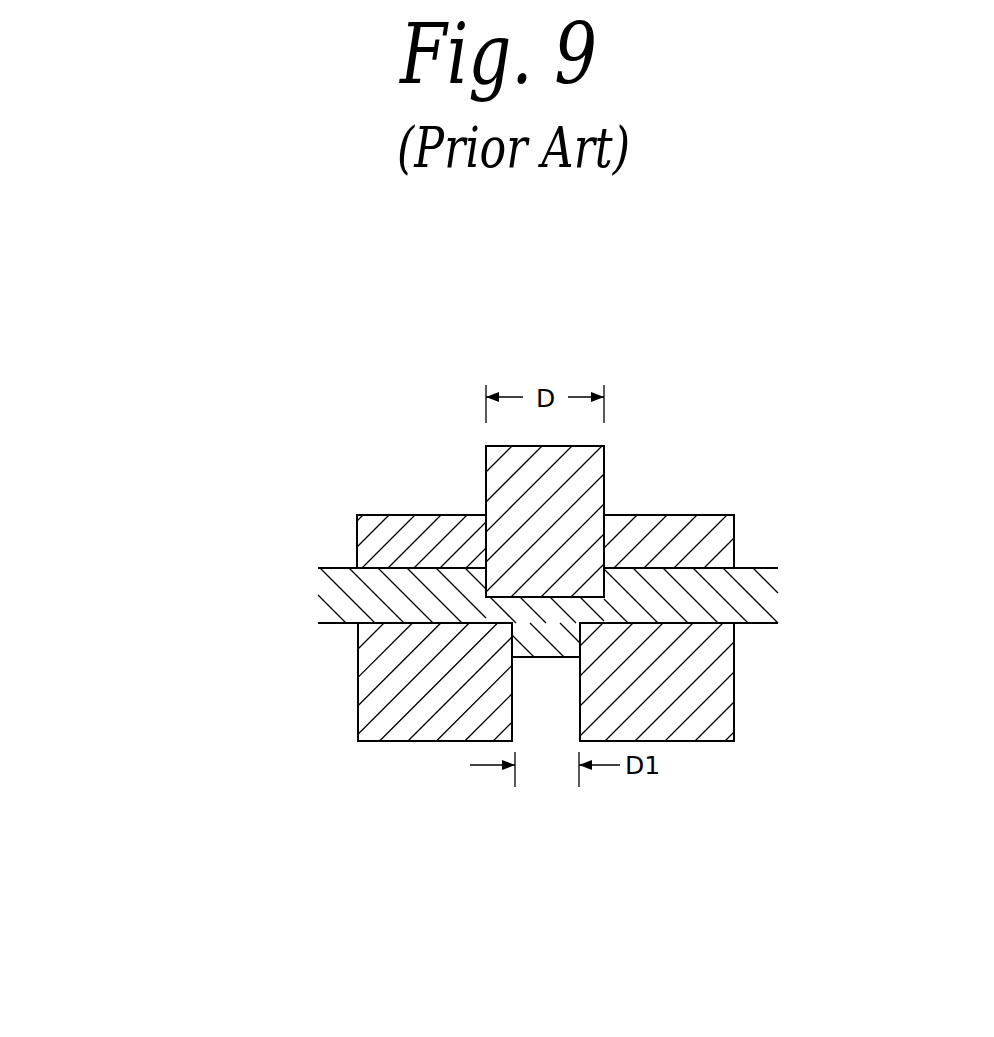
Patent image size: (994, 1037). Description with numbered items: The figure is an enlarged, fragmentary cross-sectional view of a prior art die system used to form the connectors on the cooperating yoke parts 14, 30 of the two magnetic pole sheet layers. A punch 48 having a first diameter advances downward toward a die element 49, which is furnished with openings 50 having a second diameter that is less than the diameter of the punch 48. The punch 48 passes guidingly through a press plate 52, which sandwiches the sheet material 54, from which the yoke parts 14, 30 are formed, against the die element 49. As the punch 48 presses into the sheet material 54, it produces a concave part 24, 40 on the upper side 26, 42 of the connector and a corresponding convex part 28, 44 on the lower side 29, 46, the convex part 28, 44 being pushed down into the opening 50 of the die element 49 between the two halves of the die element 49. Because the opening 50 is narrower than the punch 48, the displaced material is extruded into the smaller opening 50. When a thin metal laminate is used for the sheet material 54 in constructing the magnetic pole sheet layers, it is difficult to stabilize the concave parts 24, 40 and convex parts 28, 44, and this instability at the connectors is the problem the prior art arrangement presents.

The punch 48 is at (497, 473).
The press plate 52 is at (383, 528).
The upper side 26 is at (756, 526).
The upper side 42 is at (755, 567).
The yoke part 14 is at (409, 646).
The yoke part 30 is at (343, 622).
The concave part 24 is at (683, 502).
The concave part 40 is at (545, 592).
The sheet material 54 is at (767, 590).
The convex part 28 is at (656, 727).
The convex part 44 is at (540, 660).
The die element 49 is at (446, 693).
The lower side 29 is at (727, 682).
The lower side 46 is at (757, 625).
The opening 50 is at (513, 712).